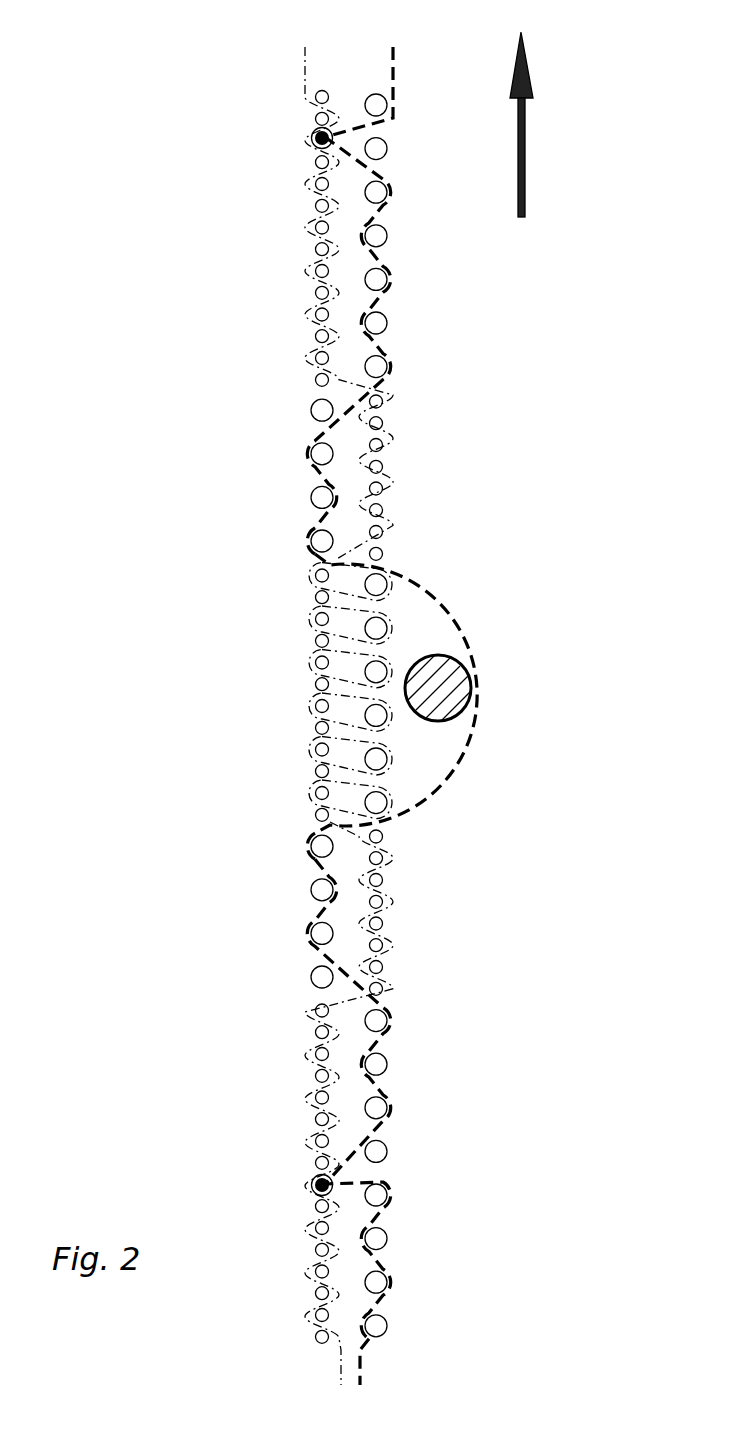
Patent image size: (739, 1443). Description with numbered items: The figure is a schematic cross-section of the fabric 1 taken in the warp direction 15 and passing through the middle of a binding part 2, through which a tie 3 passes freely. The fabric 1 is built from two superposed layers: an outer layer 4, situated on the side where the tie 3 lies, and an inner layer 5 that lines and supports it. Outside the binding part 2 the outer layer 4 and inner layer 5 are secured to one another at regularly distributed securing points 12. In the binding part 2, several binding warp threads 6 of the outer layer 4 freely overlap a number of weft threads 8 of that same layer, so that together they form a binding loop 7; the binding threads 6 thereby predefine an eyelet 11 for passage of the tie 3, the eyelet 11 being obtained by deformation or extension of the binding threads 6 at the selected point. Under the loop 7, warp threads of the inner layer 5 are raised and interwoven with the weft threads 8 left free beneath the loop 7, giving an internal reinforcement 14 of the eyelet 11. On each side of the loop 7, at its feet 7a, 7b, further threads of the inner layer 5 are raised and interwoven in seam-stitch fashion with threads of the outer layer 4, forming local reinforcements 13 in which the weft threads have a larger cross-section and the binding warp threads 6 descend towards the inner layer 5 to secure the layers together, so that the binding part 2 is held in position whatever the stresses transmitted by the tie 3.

The fabric 1 is at (352, 87).
The binding part 2 is at (304, 802).
The tie 3 is at (433, 690).
The outer layer 4 is at (407, 1143).
The inner layer 5 is at (297, 1162).
The binding warp threads 6 is at (362, 1356).
The binding loop 7 is at (477, 720).
The foot of loop 7a is at (307, 540).
The foot of loop 7b is at (307, 853).
The weft threads 8 is at (378, 629).
The eyelet 11 is at (412, 740).
The securing points 12 is at (316, 141).
The local reinforcement 13 is at (483, 393).
The internal reinforcement 14 is at (238, 568).
The warp direction 15 is at (525, 151).